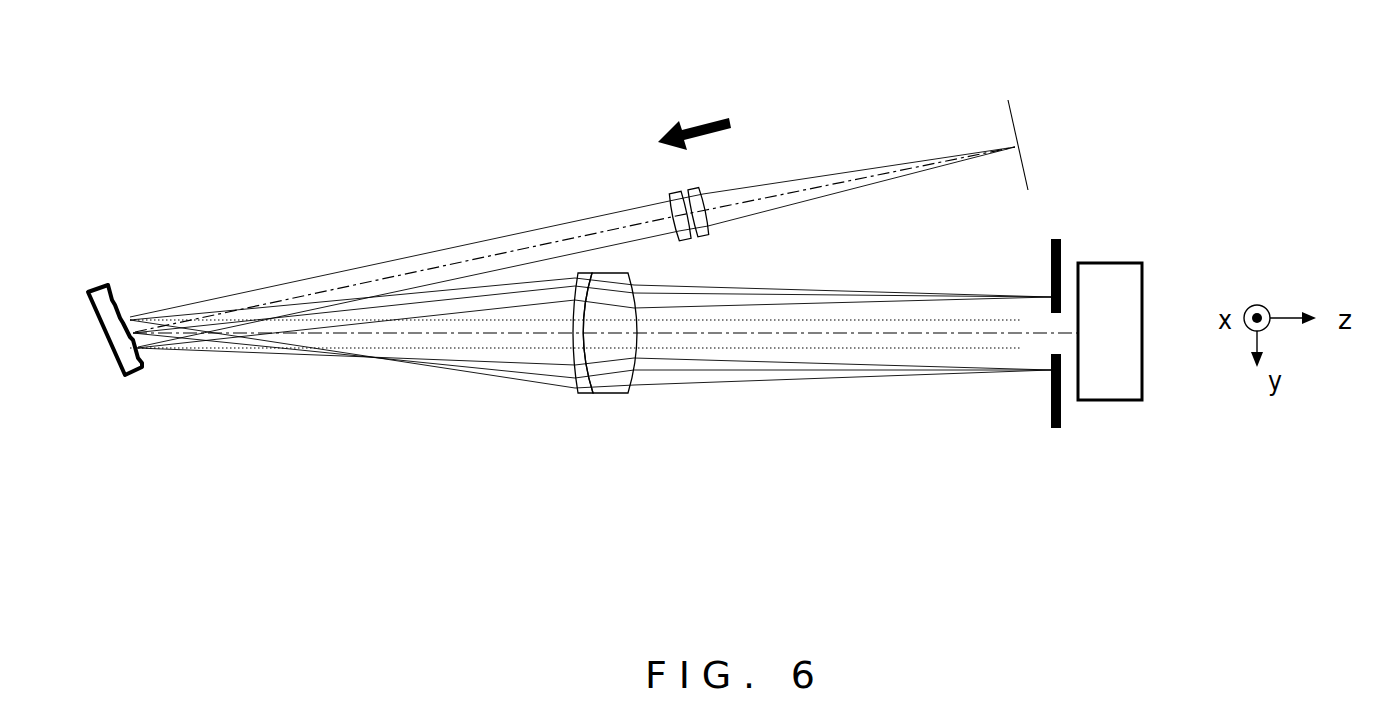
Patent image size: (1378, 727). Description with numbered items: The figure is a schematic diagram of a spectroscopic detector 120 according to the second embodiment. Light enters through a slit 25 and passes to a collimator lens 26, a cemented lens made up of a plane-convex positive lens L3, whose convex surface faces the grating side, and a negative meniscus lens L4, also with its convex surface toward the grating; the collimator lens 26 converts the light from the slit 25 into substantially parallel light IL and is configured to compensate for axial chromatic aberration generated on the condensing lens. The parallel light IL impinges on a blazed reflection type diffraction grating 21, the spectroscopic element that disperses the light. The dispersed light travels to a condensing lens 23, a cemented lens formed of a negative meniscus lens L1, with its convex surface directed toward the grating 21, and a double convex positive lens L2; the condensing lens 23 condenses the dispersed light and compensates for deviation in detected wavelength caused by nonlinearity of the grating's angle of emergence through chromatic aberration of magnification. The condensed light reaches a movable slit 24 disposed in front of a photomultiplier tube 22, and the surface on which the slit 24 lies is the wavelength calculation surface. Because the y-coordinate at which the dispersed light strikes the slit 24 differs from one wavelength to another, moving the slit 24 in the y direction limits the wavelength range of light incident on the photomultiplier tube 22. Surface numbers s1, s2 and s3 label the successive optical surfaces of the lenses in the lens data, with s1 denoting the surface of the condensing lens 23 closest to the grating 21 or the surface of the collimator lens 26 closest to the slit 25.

The spectroscopic detector 120 is at (166, 106).
The blazed reflection type diffraction grating 21 is at (104, 290).
The light IL is at (382, 265).
The surface number s1 is at (574, 312).
The surface number s2 is at (586, 305).
The surface number s3 is at (633, 300).
The negative lens L1 is at (582, 393).
The positive lens L2 is at (608, 393).
The condensing lens 23 is at (594, 435).
The positive lens L3 is at (698, 212).
The negative lens L4 is at (680, 216).
The collimator lens 26 is at (734, 240).
The slit 25 is at (1015, 128).
The movable slit 24 is at (1051, 268).
The photomultiplier tube 22 is at (1142, 325).